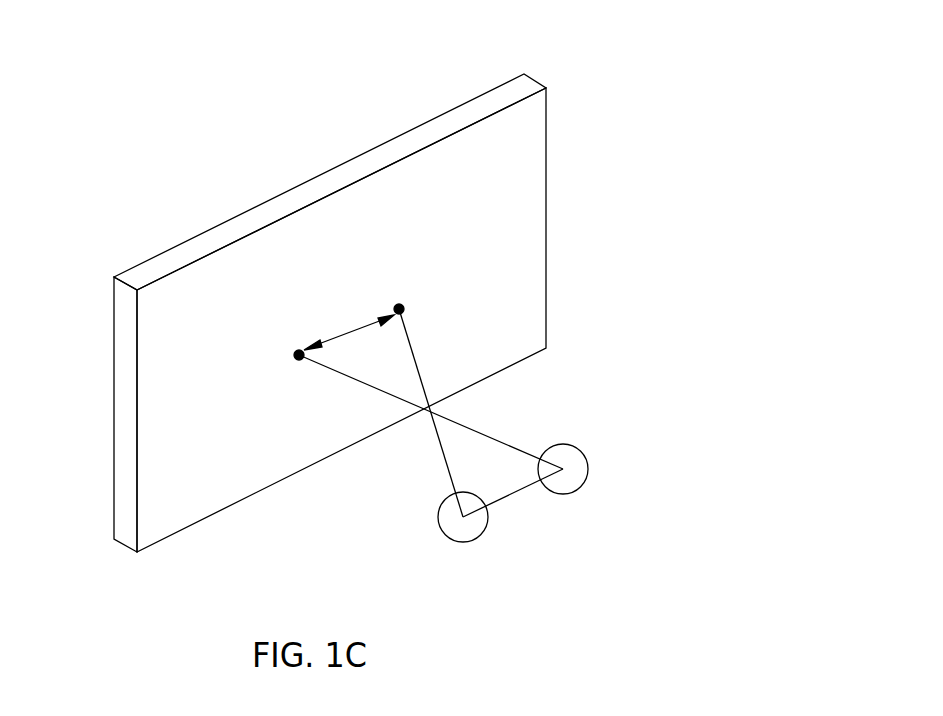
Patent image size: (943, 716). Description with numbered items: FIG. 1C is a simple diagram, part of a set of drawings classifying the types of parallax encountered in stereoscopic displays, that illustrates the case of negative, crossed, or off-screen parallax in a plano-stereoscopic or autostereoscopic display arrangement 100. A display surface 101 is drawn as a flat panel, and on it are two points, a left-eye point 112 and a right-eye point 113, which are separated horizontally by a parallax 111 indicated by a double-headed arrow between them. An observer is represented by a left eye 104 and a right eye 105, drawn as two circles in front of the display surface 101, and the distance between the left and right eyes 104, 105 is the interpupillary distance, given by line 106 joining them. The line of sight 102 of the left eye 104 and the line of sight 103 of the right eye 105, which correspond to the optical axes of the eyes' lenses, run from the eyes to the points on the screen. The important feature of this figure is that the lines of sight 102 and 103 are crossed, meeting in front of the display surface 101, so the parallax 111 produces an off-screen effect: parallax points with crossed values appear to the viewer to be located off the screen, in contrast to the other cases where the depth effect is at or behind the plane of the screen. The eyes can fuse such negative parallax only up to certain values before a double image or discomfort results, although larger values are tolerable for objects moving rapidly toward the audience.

The system 100 is at (408, 100).
The display surface 101 is at (488, 132).
The line of sight of the left eye 102 is at (343, 381).
The line of sight of the right eye 103 is at (417, 358).
The left eye 104 is at (495, 517).
The right eye 105 is at (600, 469).
The interpupillary distance line 106 is at (515, 497).
The parallax 111 is at (350, 325).
The first point on screen 112 is at (297, 343).
The second point on screen 113 is at (398, 295).